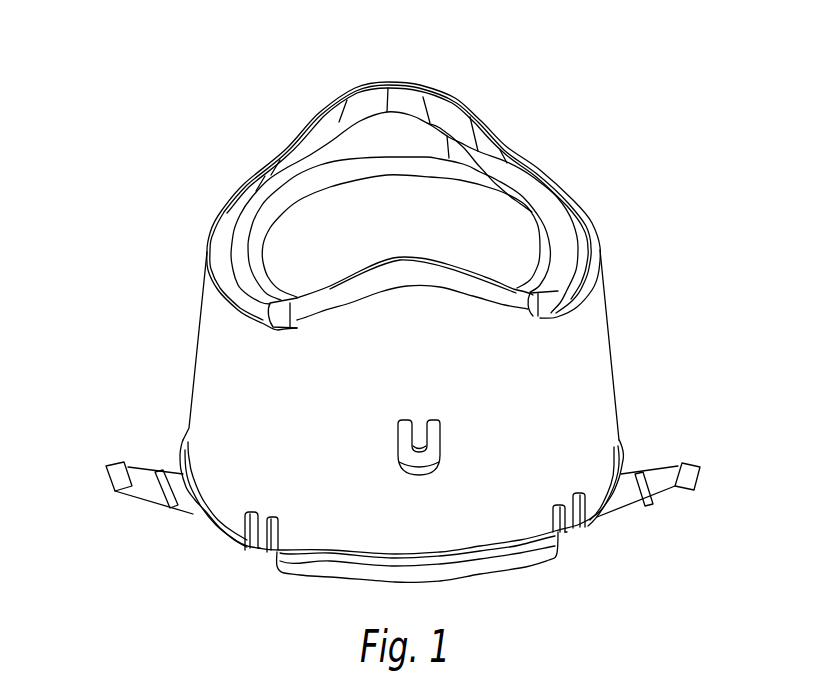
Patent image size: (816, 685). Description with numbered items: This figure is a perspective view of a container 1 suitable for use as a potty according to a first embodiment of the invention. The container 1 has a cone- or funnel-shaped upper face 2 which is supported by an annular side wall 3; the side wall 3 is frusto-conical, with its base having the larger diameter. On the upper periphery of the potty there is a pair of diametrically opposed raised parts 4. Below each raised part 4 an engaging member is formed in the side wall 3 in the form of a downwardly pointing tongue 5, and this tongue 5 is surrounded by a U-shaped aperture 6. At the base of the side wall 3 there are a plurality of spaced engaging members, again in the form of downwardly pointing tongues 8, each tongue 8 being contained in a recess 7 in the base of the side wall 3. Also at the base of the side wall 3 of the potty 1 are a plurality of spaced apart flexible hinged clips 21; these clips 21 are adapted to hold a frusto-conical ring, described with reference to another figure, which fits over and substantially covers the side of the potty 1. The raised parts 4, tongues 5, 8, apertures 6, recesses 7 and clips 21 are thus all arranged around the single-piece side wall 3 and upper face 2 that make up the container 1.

The container 1 is at (636, 189).
The upper face 2 is at (288, 238).
The side wall 3 is at (197, 338).
The raised parts 4 is at (362, 85).
The tongue 5 is at (420, 468).
The U-shaped aperture 6 is at (433, 457).
The recess 7 is at (250, 546).
The tongues 8 is at (257, 545).
The flexible hinged clips 21 is at (104, 480).